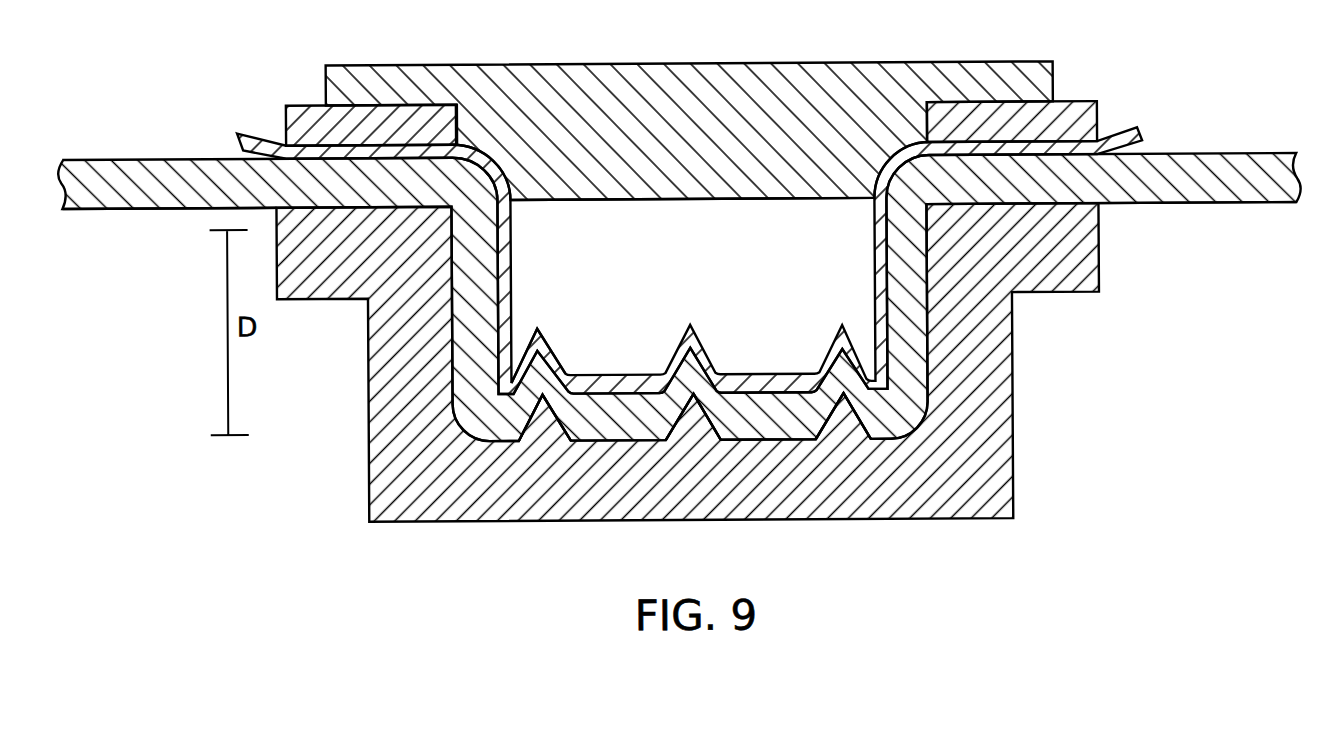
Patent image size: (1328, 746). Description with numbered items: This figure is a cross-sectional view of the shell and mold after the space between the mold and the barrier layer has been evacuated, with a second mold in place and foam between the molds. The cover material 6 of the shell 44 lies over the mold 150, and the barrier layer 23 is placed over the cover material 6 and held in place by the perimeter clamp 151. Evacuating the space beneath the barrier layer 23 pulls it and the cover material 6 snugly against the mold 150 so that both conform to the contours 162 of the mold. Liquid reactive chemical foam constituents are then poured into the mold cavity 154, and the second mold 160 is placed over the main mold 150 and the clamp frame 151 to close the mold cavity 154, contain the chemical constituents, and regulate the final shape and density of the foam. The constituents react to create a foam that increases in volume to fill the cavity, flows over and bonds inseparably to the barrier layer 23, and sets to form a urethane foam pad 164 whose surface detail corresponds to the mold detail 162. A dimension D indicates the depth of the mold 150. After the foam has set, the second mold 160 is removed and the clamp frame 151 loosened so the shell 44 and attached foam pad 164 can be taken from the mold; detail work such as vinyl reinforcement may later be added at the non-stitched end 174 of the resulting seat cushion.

The second mold 160 is at (649, 64).
The perimeter clamp 151 is at (300, 104).
The shell 44 is at (232, 110).
The barrier layer 23 is at (1138, 131).
The mold 150 is at (1012, 460).
The mold cavity 154 is at (828, 315).
The contours of the mold 162 is at (518, 396).
The urethane foam pad 164 is at (613, 245).
The non-stitched end 174 is at (127, 206).
The cover material 6 is at (1193, 206).